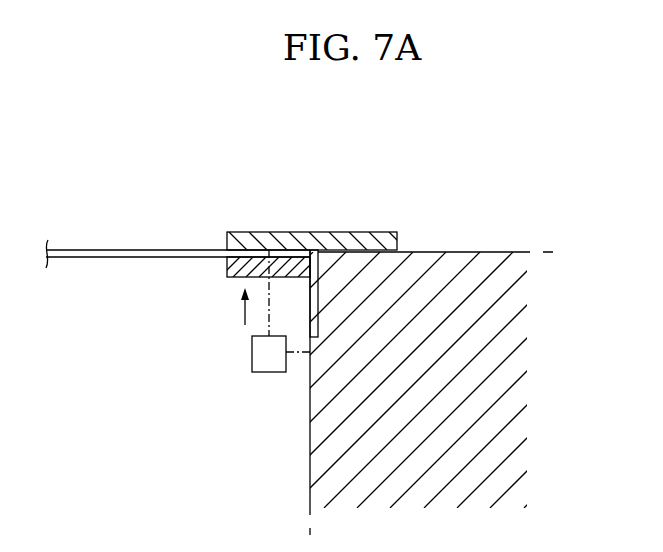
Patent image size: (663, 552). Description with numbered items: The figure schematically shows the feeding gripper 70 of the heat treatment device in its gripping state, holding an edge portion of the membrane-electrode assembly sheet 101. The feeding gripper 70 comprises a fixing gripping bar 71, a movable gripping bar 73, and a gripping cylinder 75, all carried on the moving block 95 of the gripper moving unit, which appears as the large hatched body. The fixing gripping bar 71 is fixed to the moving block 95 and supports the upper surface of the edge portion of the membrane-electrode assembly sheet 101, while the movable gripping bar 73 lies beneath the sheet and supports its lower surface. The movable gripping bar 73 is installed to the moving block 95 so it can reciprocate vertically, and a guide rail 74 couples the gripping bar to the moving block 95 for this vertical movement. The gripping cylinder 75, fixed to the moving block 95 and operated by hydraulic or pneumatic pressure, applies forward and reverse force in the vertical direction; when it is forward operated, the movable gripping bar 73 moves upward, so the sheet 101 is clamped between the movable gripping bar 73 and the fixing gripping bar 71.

The feeding gripper 70 is at (212, 269).
The fixing gripping bar 71 is at (276, 232).
The movable gripping bar 73 is at (237, 279).
The guide rail 74 is at (318, 295).
The gripping cylinder 75 is at (252, 352).
The moving block 95 is at (333, 450).
The membrane-electrode assembly sheet 101 is at (90, 250).